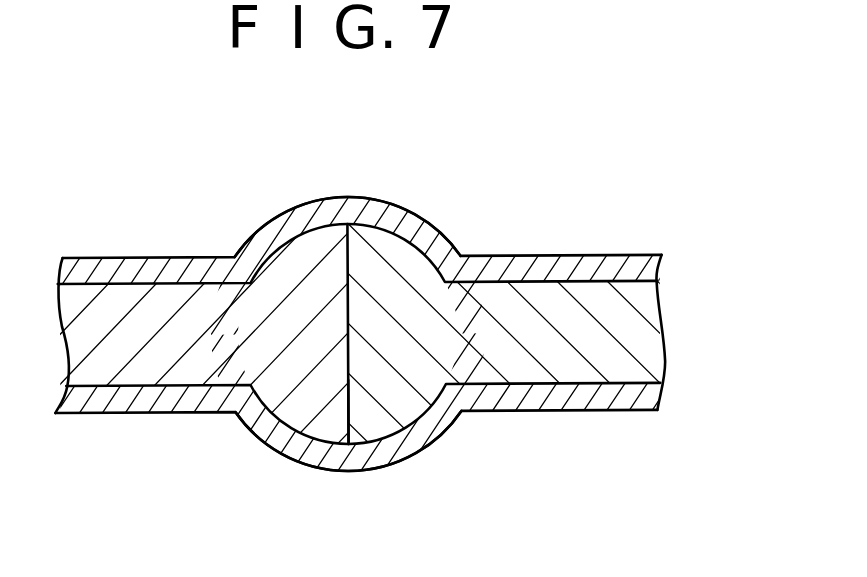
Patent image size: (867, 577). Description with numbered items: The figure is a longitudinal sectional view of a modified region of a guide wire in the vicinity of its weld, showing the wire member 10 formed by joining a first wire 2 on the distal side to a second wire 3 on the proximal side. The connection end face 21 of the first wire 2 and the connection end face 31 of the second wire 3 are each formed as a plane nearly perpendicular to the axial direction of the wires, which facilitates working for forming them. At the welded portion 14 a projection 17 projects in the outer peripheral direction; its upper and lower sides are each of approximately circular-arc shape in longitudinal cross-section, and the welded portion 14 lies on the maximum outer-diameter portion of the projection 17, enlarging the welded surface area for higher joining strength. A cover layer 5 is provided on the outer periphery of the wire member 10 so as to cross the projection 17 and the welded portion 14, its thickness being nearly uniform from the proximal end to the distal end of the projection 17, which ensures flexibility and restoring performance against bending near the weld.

The wire member 10 is at (433, 323).
The first wire 2 is at (112, 373).
The second wire 3 is at (600, 362).
The cover layer 5 is at (152, 266).
The projection 17 is at (351, 209).
The welded portion 14 is at (348, 471).
The connection end face 21 is at (349, 276).
The connection end face 31 is at (348, 380).